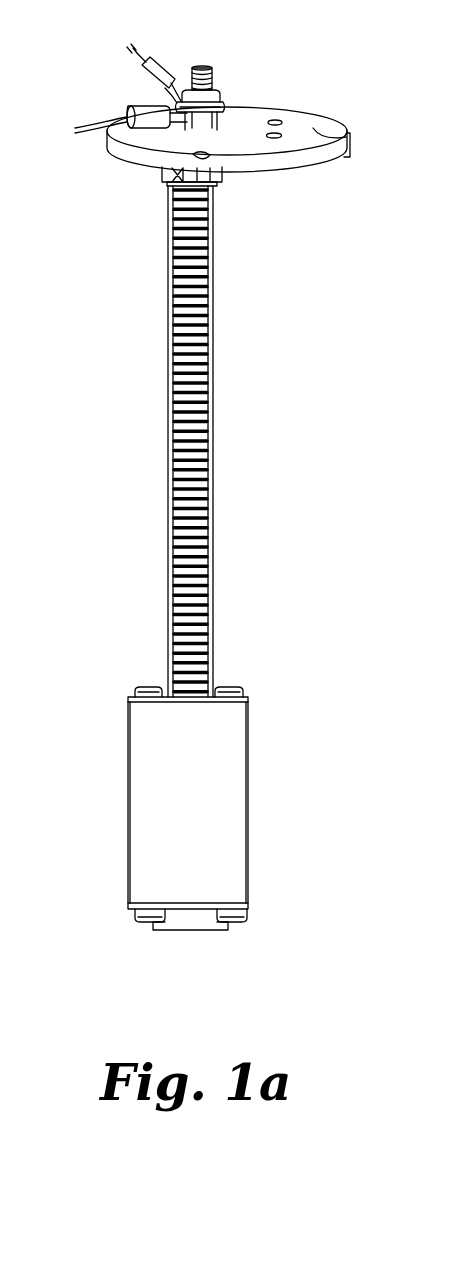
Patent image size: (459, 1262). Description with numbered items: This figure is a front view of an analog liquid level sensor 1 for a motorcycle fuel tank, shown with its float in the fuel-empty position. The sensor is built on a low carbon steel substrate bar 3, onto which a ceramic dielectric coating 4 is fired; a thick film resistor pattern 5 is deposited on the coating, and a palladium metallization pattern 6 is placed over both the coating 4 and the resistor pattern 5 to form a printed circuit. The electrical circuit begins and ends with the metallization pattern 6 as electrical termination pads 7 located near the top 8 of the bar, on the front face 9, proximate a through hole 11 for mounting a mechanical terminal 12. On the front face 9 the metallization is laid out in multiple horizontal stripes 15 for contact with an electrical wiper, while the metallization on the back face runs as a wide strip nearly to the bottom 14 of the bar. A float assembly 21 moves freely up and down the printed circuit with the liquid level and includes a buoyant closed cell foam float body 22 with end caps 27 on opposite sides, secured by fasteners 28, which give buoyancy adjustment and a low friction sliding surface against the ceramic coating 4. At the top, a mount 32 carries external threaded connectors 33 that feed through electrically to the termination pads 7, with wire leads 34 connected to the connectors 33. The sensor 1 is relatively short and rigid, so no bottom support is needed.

The analog liquid level sensor 1 is at (257, 71).
The substrate bar 3 is at (213, 266).
The ceramic dielectric coating 4 is at (195, 362).
The thick film resistor pattern 5 is at (193, 445).
The metallization pattern 6 is at (193, 523).
The electrical termination pad 7 is at (168, 184).
The top of the bar 8 is at (162, 176).
The front face 9 is at (203, 573).
The through hole 11 is at (205, 157).
The mechanical terminal 12 is at (208, 185).
The bottom of the bar 14 is at (203, 924).
The horizontal stripes 15 is at (192, 618).
The float assembly 21 is at (247, 725).
The float body 22 is at (203, 783).
The end cap 27 is at (248, 697).
The fastener 28 is at (143, 685).
The mount 32 is at (292, 117).
The threaded connector 33 is at (223, 95).
The wire lead 34 is at (133, 49).